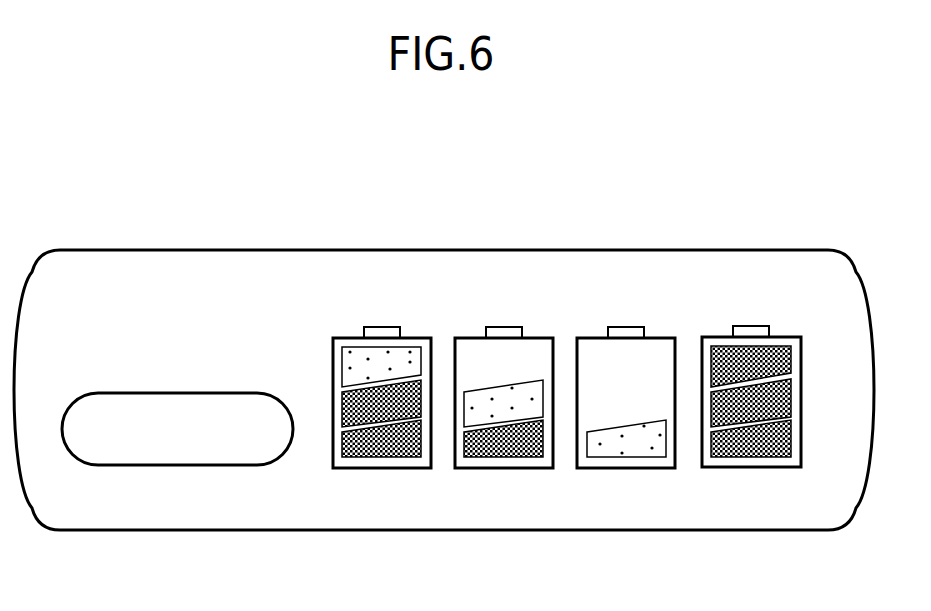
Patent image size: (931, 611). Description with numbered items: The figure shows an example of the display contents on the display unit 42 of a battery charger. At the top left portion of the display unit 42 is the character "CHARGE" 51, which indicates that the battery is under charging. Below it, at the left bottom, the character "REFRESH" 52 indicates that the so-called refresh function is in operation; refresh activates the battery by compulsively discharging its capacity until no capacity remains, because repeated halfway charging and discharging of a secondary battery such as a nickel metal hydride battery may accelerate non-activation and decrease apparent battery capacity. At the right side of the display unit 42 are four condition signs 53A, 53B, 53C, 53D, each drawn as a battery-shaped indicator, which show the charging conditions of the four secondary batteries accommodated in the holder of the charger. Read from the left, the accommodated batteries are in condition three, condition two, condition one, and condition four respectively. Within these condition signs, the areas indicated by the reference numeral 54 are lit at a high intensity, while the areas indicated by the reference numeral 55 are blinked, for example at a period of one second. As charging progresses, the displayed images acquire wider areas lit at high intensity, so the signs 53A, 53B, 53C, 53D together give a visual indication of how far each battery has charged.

The display unit 42 is at (442, 250).
The character "CHARGE" 51 is at (182, 303).
The character "REFRESH" 52 is at (181, 507).
The condition sign 53A is at (380, 326).
The condition sign 53B is at (504, 430).
The condition sign 53C is at (629, 430).
The condition sign 53D is at (748, 325).
The areas lit at a high intensity 54 is at (498, 467).
The blinked areas 55 is at (646, 438).